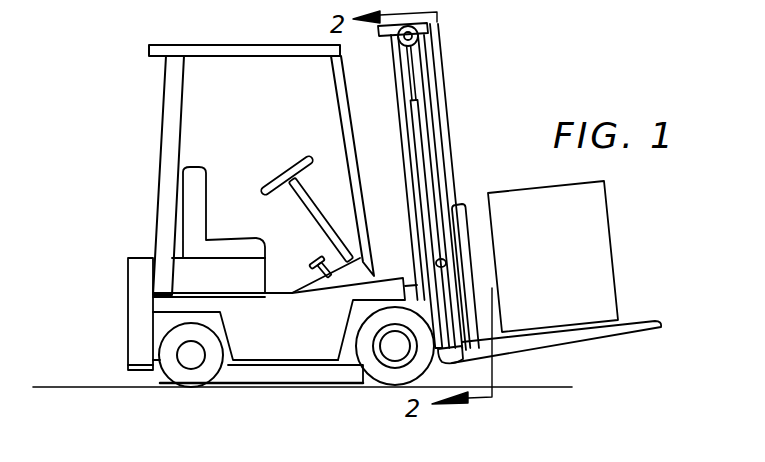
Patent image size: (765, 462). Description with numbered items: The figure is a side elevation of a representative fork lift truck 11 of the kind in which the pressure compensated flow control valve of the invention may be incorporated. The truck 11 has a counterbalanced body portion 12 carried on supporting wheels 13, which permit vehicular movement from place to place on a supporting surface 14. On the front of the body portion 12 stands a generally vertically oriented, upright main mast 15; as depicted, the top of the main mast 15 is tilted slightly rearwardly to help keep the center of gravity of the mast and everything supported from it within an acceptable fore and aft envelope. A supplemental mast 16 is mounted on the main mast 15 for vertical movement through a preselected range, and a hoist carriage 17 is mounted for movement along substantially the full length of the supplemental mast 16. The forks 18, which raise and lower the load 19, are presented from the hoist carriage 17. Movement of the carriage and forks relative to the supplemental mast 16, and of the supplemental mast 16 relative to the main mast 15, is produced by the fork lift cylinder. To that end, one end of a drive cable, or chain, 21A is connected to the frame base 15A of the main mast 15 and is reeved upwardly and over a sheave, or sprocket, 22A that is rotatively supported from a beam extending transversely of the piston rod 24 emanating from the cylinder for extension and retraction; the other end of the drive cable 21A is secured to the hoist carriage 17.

The fork lift truck 11 is at (136, 118).
The counterbalanced body portion 12 is at (305, 337).
The supporting wheels 13 is at (185, 375).
The supporting surface 14 is at (50, 386).
The main mast 15 is at (402, 97).
The frame base 15A is at (450, 358).
The supplemental mast 16 is at (442, 132).
The hoist carriage 17 is at (457, 205).
The forks 18 is at (597, 342).
The load 19 is at (561, 241).
The drive cable 21A is at (425, 78).
The sheave 22A is at (414, 29).
The piston rod 24 is at (418, 87).